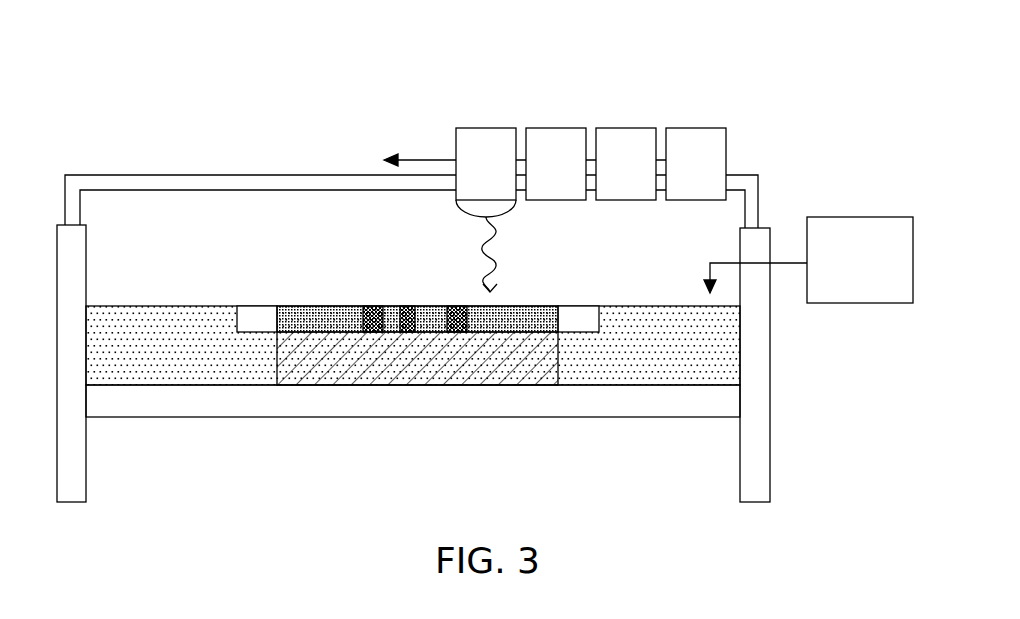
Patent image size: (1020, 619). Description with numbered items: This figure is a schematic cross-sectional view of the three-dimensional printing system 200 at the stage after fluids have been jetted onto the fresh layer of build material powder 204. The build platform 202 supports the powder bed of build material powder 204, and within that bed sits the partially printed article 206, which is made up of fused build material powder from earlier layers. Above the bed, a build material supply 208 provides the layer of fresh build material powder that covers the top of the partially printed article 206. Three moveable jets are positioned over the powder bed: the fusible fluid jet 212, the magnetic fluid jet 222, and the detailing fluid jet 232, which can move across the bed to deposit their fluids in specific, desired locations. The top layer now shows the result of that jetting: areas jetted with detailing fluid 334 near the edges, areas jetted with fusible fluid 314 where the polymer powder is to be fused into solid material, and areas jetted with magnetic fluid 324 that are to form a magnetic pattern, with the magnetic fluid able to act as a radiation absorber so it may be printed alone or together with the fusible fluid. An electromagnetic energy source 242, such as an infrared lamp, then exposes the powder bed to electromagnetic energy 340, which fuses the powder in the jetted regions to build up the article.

The 3D printing system 200 is at (148, 77).
The build platform 202 is at (578, 398).
The build material powder 204 is at (259, 372).
The partially printed article 206 is at (338, 380).
The build material supply 208 is at (881, 272).
The fusible fluid jet 212 is at (717, 174).
The magnetic fluid jet 222 is at (647, 174).
The detailing fluid jet 232 is at (577, 174).
The electromagnetic energy source 242 is at (507, 174).
The areas jetted with fusible fluid 314 is at (326, 317).
The areas jetted with magnetic fluid 324 is at (408, 310).
The areas jetted with detailing fluid 334 is at (260, 315).
The electromagnetic energy 340 is at (495, 262).